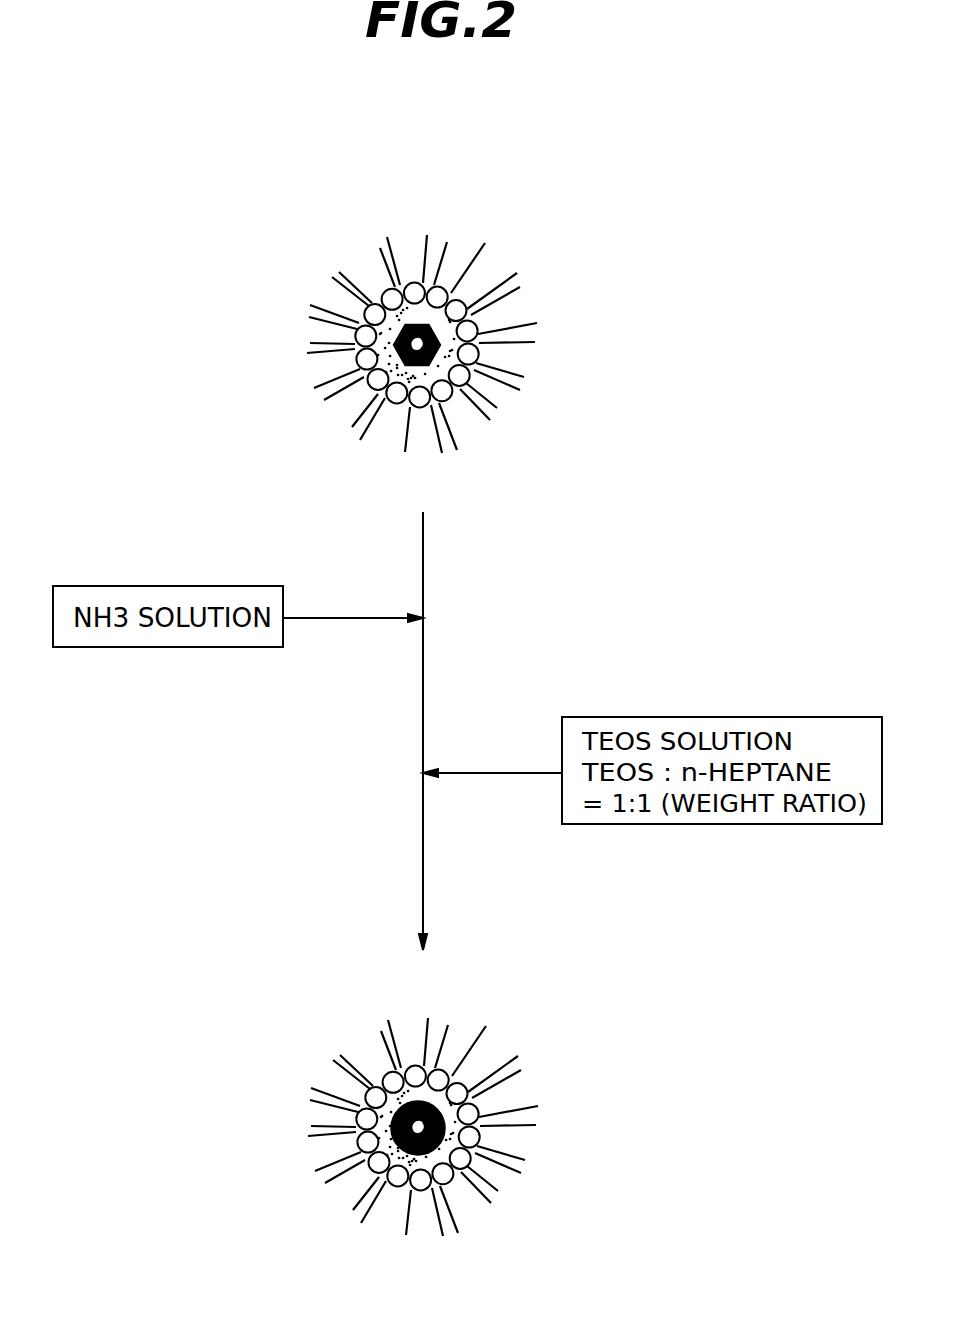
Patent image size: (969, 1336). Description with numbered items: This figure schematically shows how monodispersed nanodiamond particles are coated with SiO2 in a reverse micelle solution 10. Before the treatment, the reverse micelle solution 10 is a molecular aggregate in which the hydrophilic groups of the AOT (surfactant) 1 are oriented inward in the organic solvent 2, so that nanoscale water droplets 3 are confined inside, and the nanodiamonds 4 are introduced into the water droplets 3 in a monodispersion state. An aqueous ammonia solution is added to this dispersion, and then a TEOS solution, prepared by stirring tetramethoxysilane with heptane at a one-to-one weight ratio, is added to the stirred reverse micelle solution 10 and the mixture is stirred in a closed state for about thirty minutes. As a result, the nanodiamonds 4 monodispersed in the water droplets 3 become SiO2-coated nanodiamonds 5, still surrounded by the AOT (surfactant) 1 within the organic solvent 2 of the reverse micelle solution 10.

The AOT (surfactant) 1 is at (397, 400).
The organic solvent 2 is at (441, 726).
The water droplets 3 is at (350, 375).
The nanodiamonds 4 is at (440, 333).
The SiO2-coated nanodiamonds 5 is at (443, 1112).
The reverse micelle solution 10 is at (441, 723).